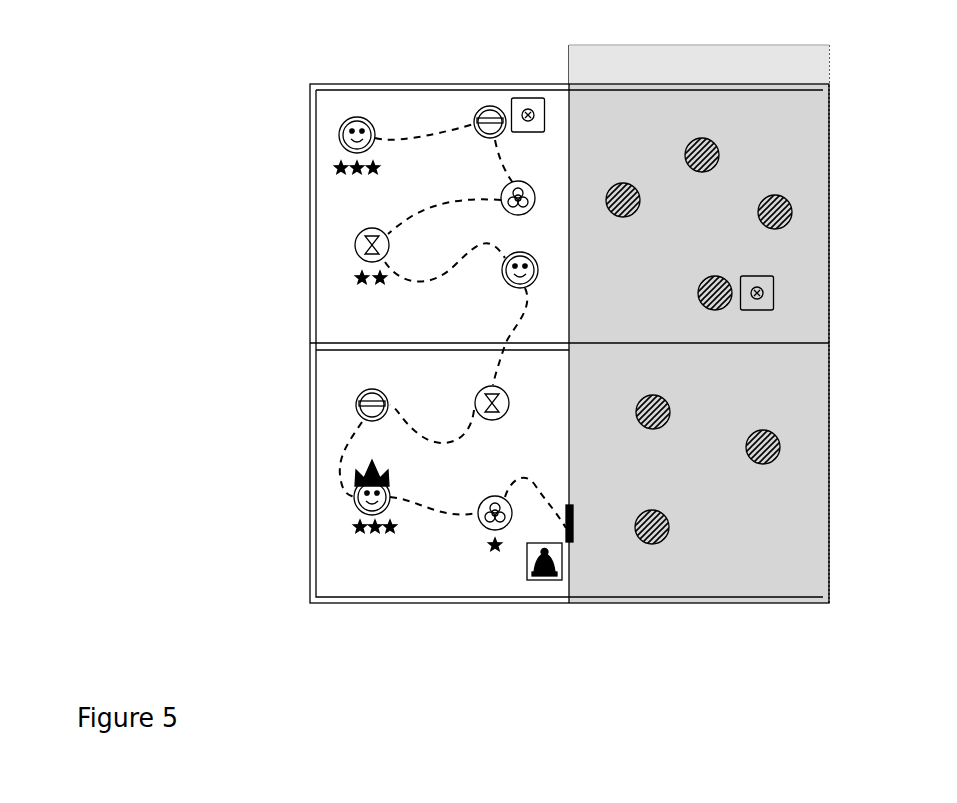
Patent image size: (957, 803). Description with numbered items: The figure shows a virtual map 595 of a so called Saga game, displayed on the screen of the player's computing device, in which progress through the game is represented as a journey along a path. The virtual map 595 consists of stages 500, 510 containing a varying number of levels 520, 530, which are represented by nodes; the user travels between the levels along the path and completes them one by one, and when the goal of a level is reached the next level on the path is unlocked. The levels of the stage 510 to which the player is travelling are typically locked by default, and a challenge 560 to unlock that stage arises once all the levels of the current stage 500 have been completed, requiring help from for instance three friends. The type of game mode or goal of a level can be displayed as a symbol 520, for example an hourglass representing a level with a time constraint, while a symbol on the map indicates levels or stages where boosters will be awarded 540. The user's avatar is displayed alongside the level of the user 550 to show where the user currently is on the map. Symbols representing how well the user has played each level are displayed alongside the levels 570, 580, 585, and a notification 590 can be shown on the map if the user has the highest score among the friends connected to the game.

The stage 500 is at (445, 85).
The stage 510 is at (840, 245).
The level 520 is at (352, 247).
The level 530 is at (795, 207).
The booster award indication 540 is at (528, 90).
The level of the user 550 is at (536, 588).
The challenge 560 is at (580, 548).
The symbol representing how well the user has played 570 is at (343, 527).
The symbol representing how well the user has played 580 is at (355, 277).
The symbol representing how well the user has played 585 is at (495, 556).
The notification 590 is at (350, 472).
The virtual map 595 is at (830, 62).